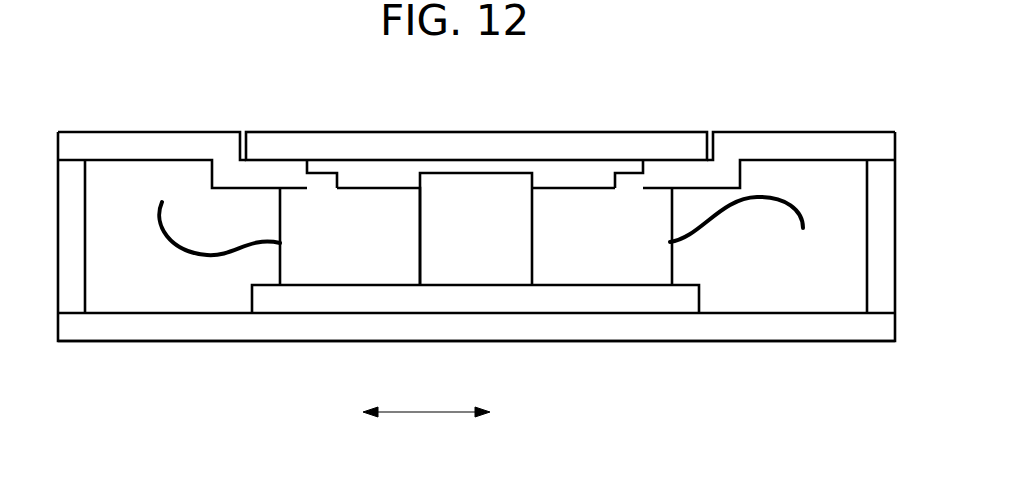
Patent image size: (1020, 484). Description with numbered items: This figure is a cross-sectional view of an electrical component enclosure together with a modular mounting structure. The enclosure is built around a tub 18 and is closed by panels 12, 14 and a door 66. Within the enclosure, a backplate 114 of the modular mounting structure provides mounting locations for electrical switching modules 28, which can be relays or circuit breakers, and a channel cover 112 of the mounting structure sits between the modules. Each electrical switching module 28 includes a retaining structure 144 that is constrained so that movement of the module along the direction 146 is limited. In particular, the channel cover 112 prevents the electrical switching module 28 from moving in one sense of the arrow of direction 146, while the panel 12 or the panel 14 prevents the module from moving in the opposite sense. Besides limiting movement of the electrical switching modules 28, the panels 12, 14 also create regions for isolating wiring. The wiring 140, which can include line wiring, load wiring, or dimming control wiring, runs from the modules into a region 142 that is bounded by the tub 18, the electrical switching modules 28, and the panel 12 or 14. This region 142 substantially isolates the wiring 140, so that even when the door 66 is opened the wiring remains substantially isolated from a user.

The panel 12 is at (150, 132).
The panel 14 is at (807, 130).
The door 66 is at (465, 130).
The retaining structure 144 is at (307, 177).
The tub 18 is at (397, 341).
The backplate 114 is at (252, 285).
The electrical switching modules 28 is at (363, 247).
The channel cover 112 is at (495, 241).
The wiring 140 is at (168, 240).
The region 142 is at (127, 288).
The direction 146 is at (420, 412).